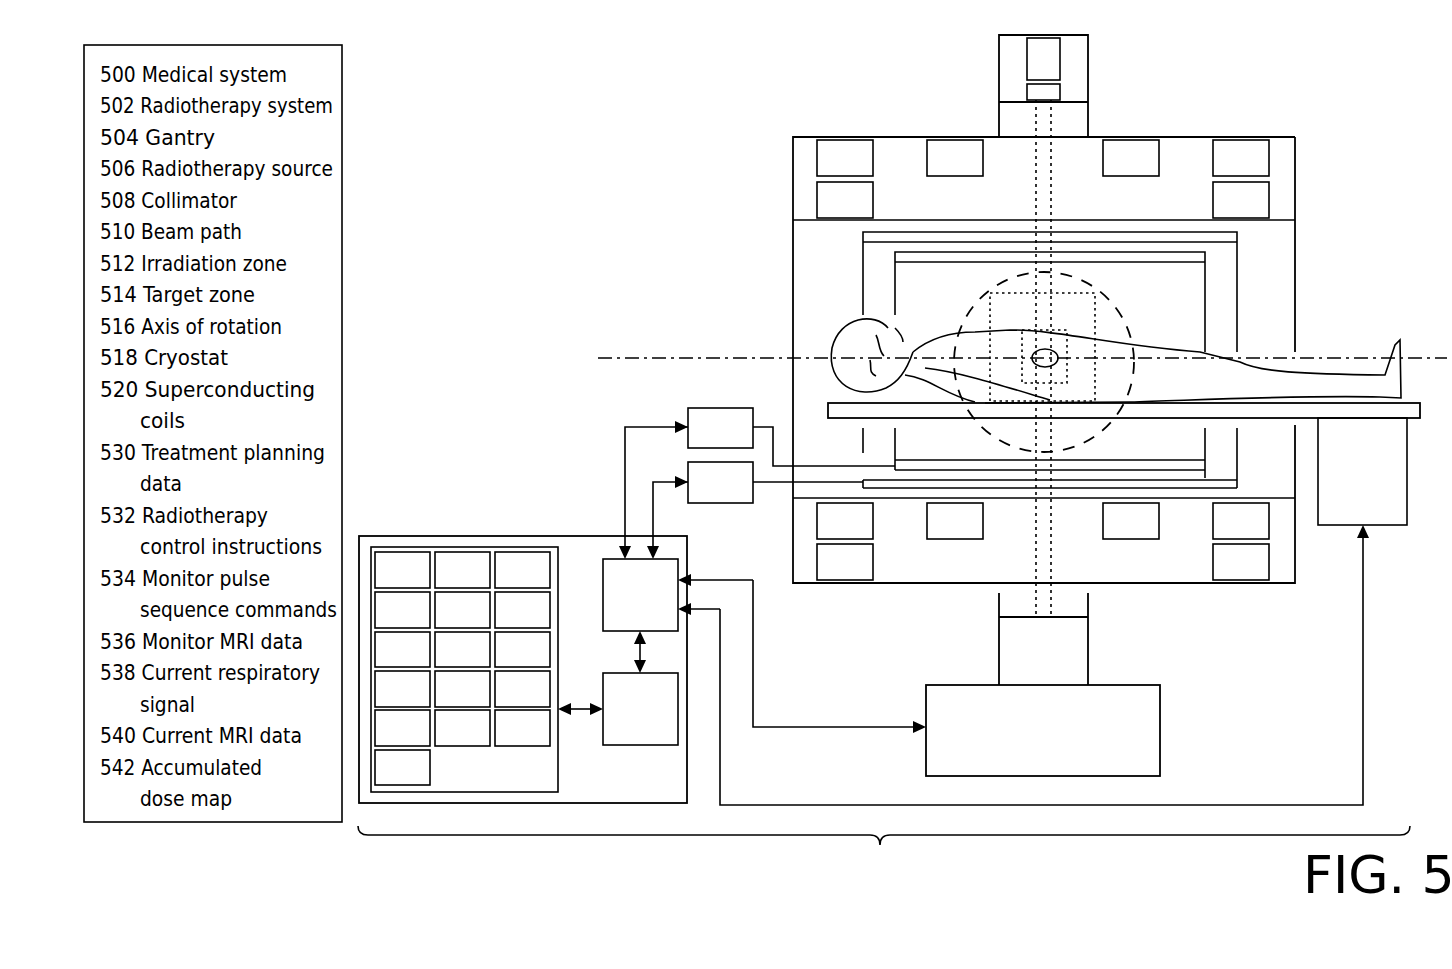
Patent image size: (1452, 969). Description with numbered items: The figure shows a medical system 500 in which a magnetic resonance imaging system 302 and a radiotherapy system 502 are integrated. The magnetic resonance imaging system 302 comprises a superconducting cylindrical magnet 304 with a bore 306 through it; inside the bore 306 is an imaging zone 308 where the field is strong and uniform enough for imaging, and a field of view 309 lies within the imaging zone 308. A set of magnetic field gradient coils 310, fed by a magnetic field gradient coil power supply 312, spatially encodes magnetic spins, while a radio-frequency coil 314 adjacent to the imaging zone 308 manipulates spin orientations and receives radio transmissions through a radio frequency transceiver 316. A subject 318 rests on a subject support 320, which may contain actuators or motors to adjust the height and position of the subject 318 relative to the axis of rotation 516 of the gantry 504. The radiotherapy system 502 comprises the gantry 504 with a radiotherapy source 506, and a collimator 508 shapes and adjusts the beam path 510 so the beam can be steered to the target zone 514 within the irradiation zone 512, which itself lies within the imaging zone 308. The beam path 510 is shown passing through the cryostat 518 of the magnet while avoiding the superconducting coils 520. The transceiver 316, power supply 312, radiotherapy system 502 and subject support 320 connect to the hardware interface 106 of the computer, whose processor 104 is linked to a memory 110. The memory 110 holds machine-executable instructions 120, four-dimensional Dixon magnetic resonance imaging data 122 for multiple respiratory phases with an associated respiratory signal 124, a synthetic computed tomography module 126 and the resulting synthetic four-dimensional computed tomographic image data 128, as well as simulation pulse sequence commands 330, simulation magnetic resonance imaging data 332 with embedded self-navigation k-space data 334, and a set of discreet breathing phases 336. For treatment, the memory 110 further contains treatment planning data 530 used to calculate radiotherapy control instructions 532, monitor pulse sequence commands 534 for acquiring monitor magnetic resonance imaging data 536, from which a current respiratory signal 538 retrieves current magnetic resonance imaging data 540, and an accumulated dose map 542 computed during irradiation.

The medical system 500 is at (895, 877).
The radiotherapy system 502 is at (1125, 56).
The gantry 504 is at (1088, 70).
The radiotherapy source 506 is at (1027, 50).
The collimator 508 is at (1027, 91).
The beam path 510 is at (1052, 182).
The irradiation zone 512 is at (1020, 346).
The target zone 514 is at (1045, 349).
The axis of rotation 516 is at (1417, 358).
The cryostat 518 is at (803, 178).
The superconducting coils 520 is at (828, 170).
The treatment planning data 530 is at (384, 701).
The radiotherapy control instructions 532 is at (444, 701).
The monitor pulse sequence commands 534 is at (504, 701).
The monitor magnetic resonance imaging data 536 is at (384, 740).
The current respiratory signal 538 is at (444, 740).
The current magnetic resonance imaging data 540 is at (504, 740).
The accumulated dose map 542 is at (384, 779).
The magnetic resonance imaging system 302 is at (1368, 128).
The magnet 304 is at (1298, 172).
The bore 306 is at (1262, 291).
The imaging zone 308 is at (1102, 437).
The field of view 309 is at (1097, 325).
The magnetic field gradient coils 310 is at (1237, 480).
The magnetic field gradient coil power supply 312 is at (700, 494).
The radio-frequency coil 314 is at (895, 257).
The radio frequency transceiver 316 is at (700, 440).
The subject 318 is at (1355, 358).
The subject support 320 is at (828, 410).
The processor 104 is at (620, 720).
The hardware interface 106 is at (620, 606).
The memory 110 is at (518, 536).
The machine-executable instructions 120 is at (384, 582).
The four-dimensional Dixon magnetic resonance imaging data 122 is at (444, 582).
The respiratory signal 124 is at (504, 582).
The synthetic computed tomography module 126 is at (384, 622).
The synthetic four-dimensional computed tomographic image data 128 is at (444, 622).
The simulation pulse sequence commands 330 is at (504, 622).
The simulation magnetic resonance imaging data 332 is at (384, 661).
The self-navigation k-space data 334 is at (444, 661).
The set of discreet breathing phases 336 is at (504, 661).